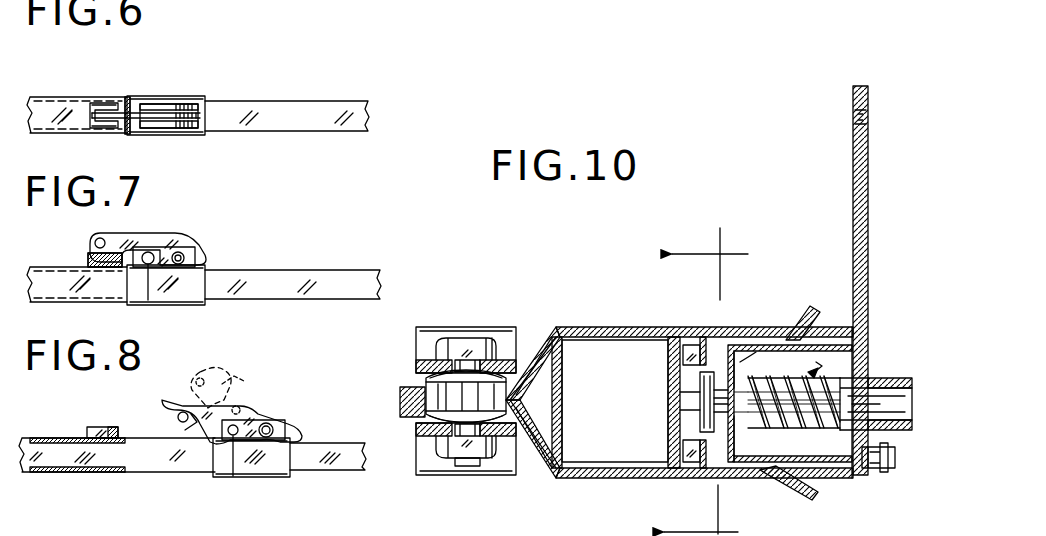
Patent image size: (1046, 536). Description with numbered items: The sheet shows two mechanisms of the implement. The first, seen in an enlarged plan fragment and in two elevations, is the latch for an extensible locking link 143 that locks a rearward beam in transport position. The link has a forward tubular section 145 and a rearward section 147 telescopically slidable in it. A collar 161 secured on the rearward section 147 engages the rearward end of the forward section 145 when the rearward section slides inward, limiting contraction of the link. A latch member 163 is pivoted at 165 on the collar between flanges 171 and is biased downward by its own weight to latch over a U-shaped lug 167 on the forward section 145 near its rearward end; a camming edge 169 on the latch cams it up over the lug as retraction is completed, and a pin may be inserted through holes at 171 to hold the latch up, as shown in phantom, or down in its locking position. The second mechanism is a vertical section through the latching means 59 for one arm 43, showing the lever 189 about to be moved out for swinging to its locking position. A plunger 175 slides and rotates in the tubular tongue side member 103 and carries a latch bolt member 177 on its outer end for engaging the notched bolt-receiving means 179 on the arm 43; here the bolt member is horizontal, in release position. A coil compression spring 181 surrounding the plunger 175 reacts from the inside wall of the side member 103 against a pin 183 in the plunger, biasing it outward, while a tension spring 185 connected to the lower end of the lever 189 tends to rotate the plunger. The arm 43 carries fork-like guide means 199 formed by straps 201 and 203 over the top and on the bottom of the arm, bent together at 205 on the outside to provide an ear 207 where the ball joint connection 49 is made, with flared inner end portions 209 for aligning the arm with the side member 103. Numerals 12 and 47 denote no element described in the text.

In FIG. 6, the forward tubular section 145 is at (58, 94).
In FIG. 7, the forward tubular section 145 is at (44, 266).
In FIG. 8, the forward tubular section 145 is at (34, 472).
In FIG. 6, the rearward section 147 is at (301, 102).
In FIG. 7, the rearward section 147 is at (372, 244).
In FIG. 8, the rearward section 147 is at (332, 468).
In FIG. 6, the collar 161 is at (202, 98).
In FIG. 7, the collar 161 is at (203, 305).
In FIG. 8, the collar 161 is at (256, 477).
In FIG. 6, the latch member 163 is at (92, 116).
In FIG. 7, the latch member 163 is at (150, 233).
In FIG. 8, the latch member 163 is at (218, 404).
In FIG. 6, the pivot 165 is at (182, 134).
In FIG. 7, the pivot 165 is at (180, 250).
In FIG. 8, the pivot 165 is at (278, 423).
In FIG. 6, the U-shaped lug 167 is at (108, 97).
In FIG. 7, the U-shaped lug 167 is at (94, 260).
In FIG. 8, the U-shaped lug 167 is at (102, 427).
In FIG. 8, the camming edge 169 is at (178, 442).
In FIG. 6, the flanges 171 is at (163, 98).
In FIG. 7, the flanges 171 is at (150, 271).
In FIG. 8, the flanges 171 is at (232, 437).
In FIG. 8, the extensible locking link 143 is at (251, 396).
In FIG. 10, the section line 12 is at (706, 381).
In FIG. 10, the arm 43 is at (598, 466).
In FIG. 10, the lower roller bracket 47 is at (408, 470).
In FIG. 10, the ball joint connection 49 is at (464, 340).
In FIG. 10, the latching means 59 is at (870, 332).
In FIG. 10, the tongue side member 103 is at (806, 326).
In FIG. 10, the plunger 175 is at (880, 396).
In FIG. 10, the latch bolt member 177 is at (692, 400).
In FIG. 10, the notched bolt-receiving means 179 is at (695, 346).
In FIG. 10, the coil compression spring 181 is at (770, 408).
In FIG. 10, the pin 183 is at (792, 338).
In FIG. 10, the tension spring 185 is at (878, 468).
In FIG. 10, the lever 189 is at (870, 190).
In FIG. 10, the guide means 199 is at (606, 322).
In FIG. 10, the strap 201 is at (623, 326).
In FIG. 10, the strap 203 is at (654, 478).
In FIG. 10, the bent portions 205 is at (536, 342).
In FIG. 10, the ear 207 is at (406, 382).
In FIG. 10, the flared inner end portions 209 is at (822, 314).